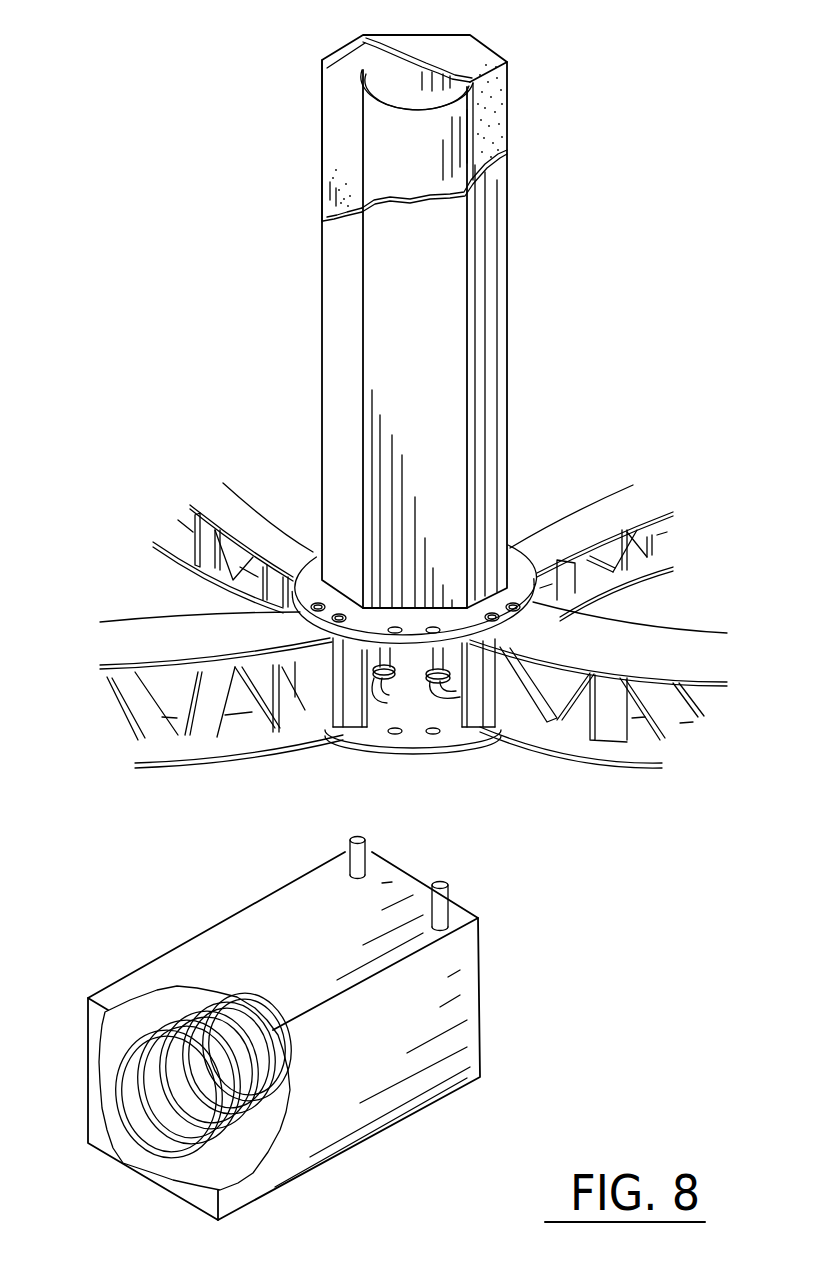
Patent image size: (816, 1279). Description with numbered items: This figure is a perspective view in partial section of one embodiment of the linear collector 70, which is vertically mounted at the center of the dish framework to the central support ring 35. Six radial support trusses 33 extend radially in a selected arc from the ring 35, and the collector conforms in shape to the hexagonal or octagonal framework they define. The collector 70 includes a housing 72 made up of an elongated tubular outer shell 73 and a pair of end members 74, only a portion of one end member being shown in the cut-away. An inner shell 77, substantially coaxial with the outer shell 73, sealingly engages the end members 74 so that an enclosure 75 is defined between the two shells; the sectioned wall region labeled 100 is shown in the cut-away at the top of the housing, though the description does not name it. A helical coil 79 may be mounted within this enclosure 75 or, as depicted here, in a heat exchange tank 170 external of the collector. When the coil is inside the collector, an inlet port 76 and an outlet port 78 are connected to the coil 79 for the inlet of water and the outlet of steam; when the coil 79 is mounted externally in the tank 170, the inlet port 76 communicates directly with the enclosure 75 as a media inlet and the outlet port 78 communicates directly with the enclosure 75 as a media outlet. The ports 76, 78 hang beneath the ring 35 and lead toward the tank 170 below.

The radial support truss 33 is at (632, 645).
The central support ring 35 is at (512, 557).
The linear collector 70 is at (522, 300).
The housing 72 is at (499, 333).
The elongated tubular outer shell 73 is at (330, 320).
The end member 74 is at (444, 46).
The enclosure 75 is at (312, 66).
The inlet port 76 is at (391, 704).
The inner shell 77 is at (502, 156).
The outlet port 78 is at (431, 704).
The helical coil 79 is at (120, 1030).
The insulation 100 is at (514, 127).
The heat exchange tank 170 is at (402, 1135).